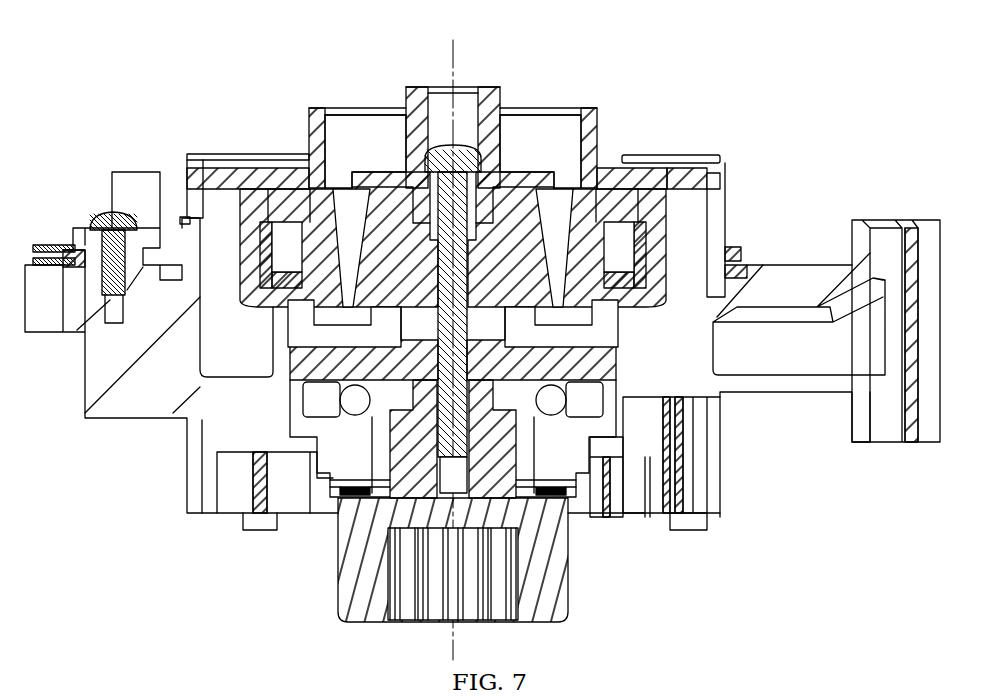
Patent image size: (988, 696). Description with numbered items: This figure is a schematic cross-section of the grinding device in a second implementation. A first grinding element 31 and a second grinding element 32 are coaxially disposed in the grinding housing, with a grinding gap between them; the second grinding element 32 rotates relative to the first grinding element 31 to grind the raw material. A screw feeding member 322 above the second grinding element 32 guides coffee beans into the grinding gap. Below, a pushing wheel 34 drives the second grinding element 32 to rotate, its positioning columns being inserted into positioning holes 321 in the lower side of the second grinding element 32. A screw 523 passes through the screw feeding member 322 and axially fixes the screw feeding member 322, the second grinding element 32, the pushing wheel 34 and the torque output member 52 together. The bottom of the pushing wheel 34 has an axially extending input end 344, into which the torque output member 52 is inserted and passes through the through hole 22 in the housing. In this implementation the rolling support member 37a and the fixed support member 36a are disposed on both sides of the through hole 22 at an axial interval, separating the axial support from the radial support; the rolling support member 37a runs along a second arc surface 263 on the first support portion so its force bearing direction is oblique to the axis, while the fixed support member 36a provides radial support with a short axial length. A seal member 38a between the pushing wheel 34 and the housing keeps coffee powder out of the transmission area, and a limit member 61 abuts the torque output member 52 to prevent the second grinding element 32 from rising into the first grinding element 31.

The screw 523 is at (412, 156).
The screw feeding member 322 is at (497, 140).
The second grinding element 32 is at (395, 245).
The first grinding element 31 is at (718, 162).
The positioning holes 321 is at (545, 265).
The pushing wheel 34 is at (385, 372).
The second arc surface 263 is at (352, 418).
The through hole 22 is at (388, 447).
The input end 344 is at (340, 470).
The limit member 61 is at (345, 493).
The torque output member 52 is at (362, 567).
The seal member 38a is at (578, 390).
The rolling support member 37a is at (553, 428).
The fixed support member 36a is at (553, 470).